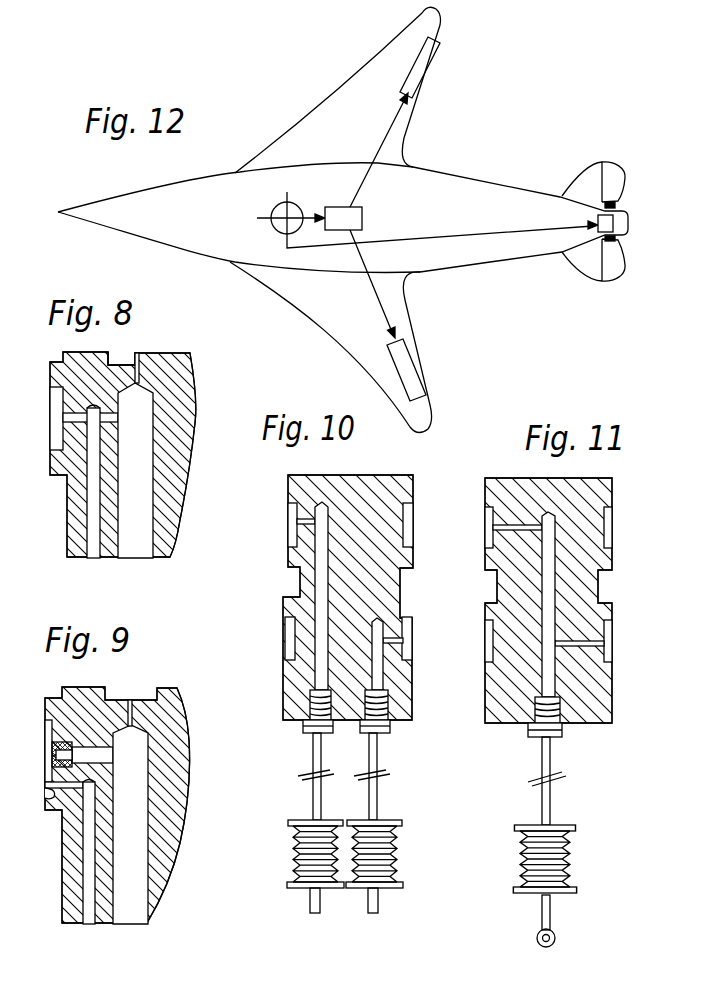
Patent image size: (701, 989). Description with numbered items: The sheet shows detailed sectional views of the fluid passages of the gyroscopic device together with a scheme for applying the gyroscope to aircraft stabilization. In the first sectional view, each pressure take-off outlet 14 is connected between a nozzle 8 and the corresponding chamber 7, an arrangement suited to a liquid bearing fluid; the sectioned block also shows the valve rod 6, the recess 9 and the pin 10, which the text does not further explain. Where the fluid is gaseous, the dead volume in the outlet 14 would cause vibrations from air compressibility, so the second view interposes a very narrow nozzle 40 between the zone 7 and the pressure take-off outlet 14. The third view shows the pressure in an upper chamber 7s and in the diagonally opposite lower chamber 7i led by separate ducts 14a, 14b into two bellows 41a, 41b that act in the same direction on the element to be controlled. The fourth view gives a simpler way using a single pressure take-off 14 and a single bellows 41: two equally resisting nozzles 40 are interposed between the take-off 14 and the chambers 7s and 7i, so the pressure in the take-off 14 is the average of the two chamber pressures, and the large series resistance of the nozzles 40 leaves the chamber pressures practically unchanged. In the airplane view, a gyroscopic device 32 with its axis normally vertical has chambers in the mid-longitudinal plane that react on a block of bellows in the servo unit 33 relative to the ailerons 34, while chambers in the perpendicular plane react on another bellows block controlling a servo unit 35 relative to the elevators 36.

In FIG. 8, the valve rod 6 is at (138, 548).
In FIG. 9, the valve rod 6 is at (122, 923).
In FIG. 8, the chamber 7 is at (53, 408).
In FIG. 9, the chamber 7 is at (50, 755).
In FIG. 8, the nozzle 8 is at (114, 416).
In FIG. 9, the nozzle 8 is at (50, 762).
In FIG. 8, the recess 9 is at (115, 357).
In FIG. 8, the pin 10 is at (139, 364).
In FIG. 9, the pin 10 is at (133, 700).
In FIG. 8, the pressure take-off outlet 14 is at (92, 545).
In FIG. 9, the pressure take-off outlet 14 is at (85, 923).
In FIG. 11, the pressure take-off outlet 14 is at (555, 685).
In FIG. 10, the upper chamber 7s is at (292, 508).
In FIG. 11, the upper chamber 7s is at (487, 535).
In FIG. 10, the lower chamber 7i is at (405, 645).
In FIG. 11, the lower chamber 7i is at (618, 640).
In FIG. 10, the duct 14a is at (312, 672).
In FIG. 10, the duct 14b is at (380, 673).
In FIG. 9, the nozzle 40 is at (47, 795).
In FIG. 11, the nozzle 40 is at (573, 643).
In FIG. 11, the bellows 41 is at (570, 847).
In FIG. 10, the bellows 41a is at (298, 857).
In FIG. 10, the bellows 41b is at (397, 847).
In FIG. 12, the gyroscopic device 32 is at (258, 218).
In FIG. 12, the servo unit 33 is at (363, 220).
In FIG. 12, the ailerons 34 is at (424, 375).
In FIG. 12, the servo unit 35 is at (612, 278).
In FIG. 12, the elevators 36 is at (597, 218).